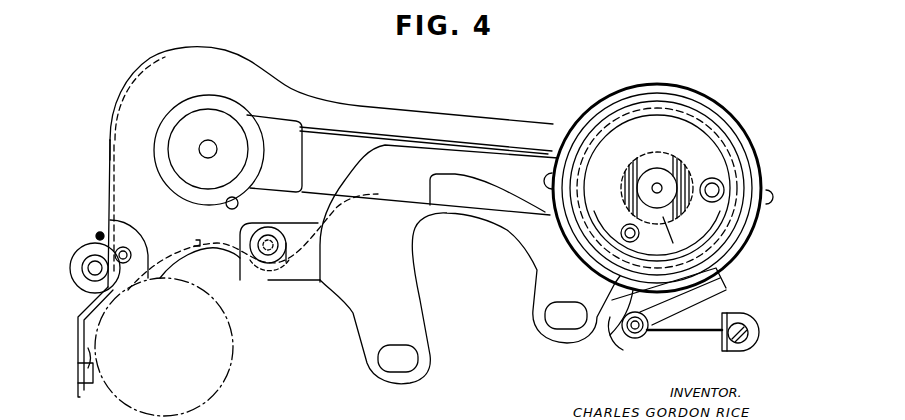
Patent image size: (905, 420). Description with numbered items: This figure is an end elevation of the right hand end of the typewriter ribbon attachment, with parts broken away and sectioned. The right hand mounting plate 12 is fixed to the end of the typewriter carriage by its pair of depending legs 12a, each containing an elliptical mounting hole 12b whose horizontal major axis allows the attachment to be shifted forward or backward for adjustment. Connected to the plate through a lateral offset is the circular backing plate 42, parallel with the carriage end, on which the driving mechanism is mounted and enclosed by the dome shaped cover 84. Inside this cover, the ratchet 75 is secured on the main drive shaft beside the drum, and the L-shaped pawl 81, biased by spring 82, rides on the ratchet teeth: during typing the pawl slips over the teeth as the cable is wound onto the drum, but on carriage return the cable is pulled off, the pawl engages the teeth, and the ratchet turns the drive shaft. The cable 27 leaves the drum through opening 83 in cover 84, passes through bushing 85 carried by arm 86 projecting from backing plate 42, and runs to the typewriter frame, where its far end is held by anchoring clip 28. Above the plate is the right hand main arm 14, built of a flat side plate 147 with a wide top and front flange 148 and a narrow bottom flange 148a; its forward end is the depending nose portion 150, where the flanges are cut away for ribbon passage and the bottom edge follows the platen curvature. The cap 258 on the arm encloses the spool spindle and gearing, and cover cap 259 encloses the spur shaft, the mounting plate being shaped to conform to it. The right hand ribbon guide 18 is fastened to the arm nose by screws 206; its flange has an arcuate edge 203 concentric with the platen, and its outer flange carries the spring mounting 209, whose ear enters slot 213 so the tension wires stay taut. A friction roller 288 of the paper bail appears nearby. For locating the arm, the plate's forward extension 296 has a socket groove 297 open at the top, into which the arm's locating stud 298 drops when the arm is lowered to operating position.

The main arm 14 is at (303, 85).
The right hand mounting plate 12 is at (427, 231).
The depending legs 12a is at (367, 307).
The mounting holes 12b is at (395, 368).
The right hand ribbon guide 18 is at (72, 310).
The cable 27 is at (720, 133).
The anchoring clip 28 is at (760, 330).
The backing plate 42 is at (608, 326).
The ratchet 75 is at (657, 150).
The pawl 81 is at (710, 177).
The spring 82 is at (625, 232).
The opening 83 is at (720, 282).
The cover / dome shaped cap 84 is at (745, 237).
The bushing 85 is at (647, 343).
The arm 86 is at (683, 312).
The flat side plate 147 is at (350, 110).
The top and front flange 148 is at (158, 72).
The bottom flange 148a is at (200, 246).
The nose portion 150 is at (127, 132).
The arcuate edge 203 is at (100, 317).
The screws 206 is at (100, 233).
The spring mounting 209 is at (78, 370).
The slot 213 is at (97, 353).
The cap 258 is at (228, 98).
The cover cap 259 is at (440, 137).
The friction rollers 288 is at (72, 262).
The extension 296 is at (290, 277).
The socket groove 297 is at (253, 278).
The locating stud 298 is at (270, 260).